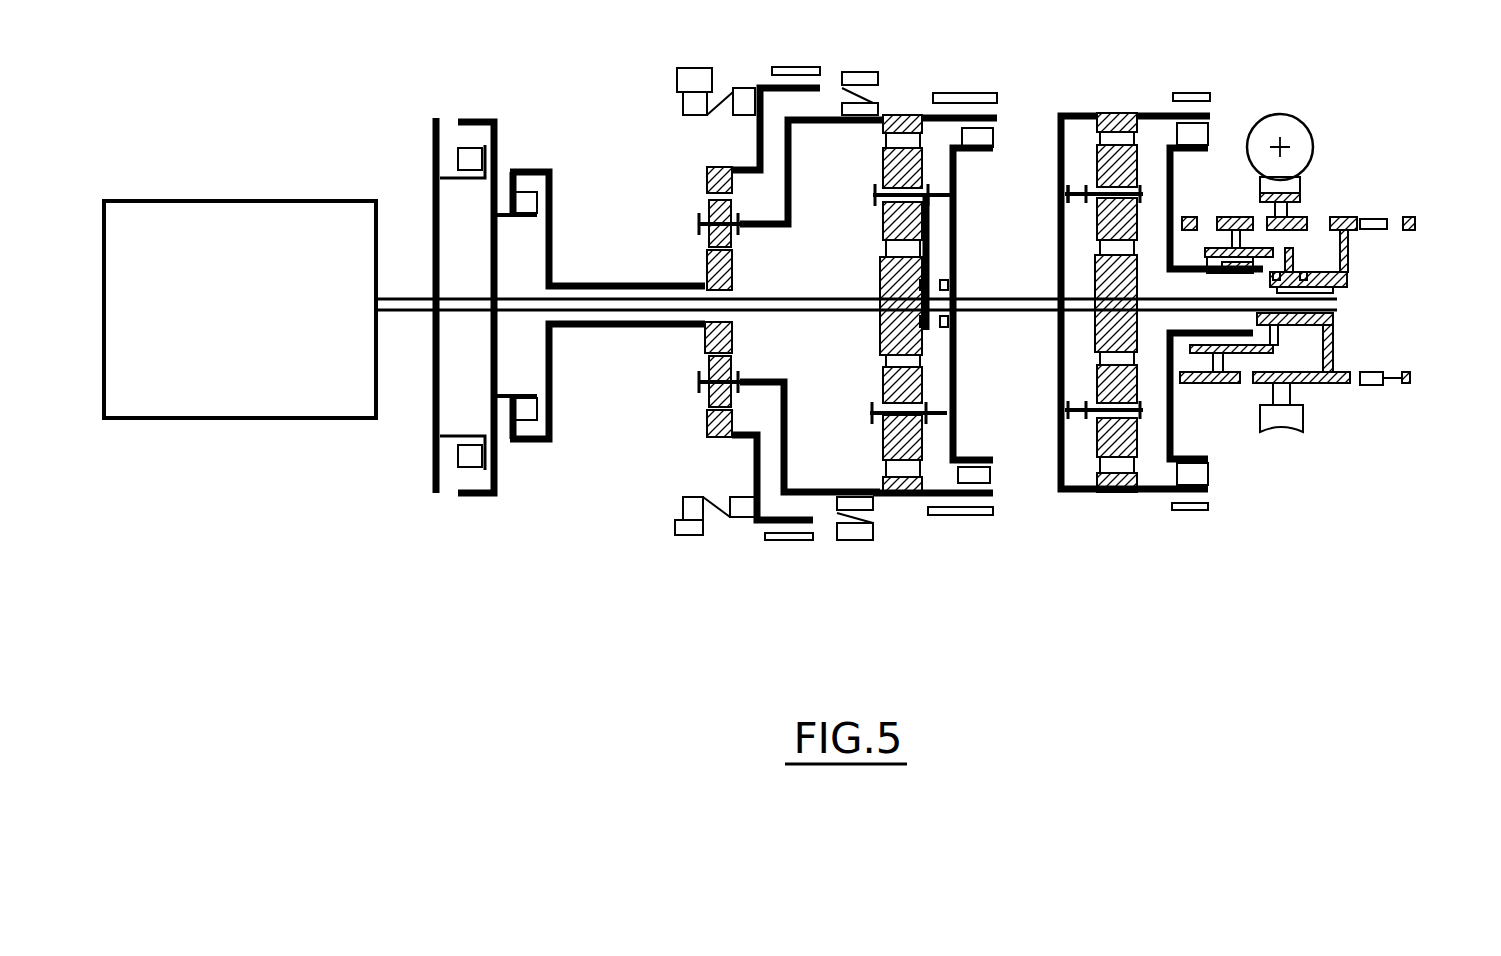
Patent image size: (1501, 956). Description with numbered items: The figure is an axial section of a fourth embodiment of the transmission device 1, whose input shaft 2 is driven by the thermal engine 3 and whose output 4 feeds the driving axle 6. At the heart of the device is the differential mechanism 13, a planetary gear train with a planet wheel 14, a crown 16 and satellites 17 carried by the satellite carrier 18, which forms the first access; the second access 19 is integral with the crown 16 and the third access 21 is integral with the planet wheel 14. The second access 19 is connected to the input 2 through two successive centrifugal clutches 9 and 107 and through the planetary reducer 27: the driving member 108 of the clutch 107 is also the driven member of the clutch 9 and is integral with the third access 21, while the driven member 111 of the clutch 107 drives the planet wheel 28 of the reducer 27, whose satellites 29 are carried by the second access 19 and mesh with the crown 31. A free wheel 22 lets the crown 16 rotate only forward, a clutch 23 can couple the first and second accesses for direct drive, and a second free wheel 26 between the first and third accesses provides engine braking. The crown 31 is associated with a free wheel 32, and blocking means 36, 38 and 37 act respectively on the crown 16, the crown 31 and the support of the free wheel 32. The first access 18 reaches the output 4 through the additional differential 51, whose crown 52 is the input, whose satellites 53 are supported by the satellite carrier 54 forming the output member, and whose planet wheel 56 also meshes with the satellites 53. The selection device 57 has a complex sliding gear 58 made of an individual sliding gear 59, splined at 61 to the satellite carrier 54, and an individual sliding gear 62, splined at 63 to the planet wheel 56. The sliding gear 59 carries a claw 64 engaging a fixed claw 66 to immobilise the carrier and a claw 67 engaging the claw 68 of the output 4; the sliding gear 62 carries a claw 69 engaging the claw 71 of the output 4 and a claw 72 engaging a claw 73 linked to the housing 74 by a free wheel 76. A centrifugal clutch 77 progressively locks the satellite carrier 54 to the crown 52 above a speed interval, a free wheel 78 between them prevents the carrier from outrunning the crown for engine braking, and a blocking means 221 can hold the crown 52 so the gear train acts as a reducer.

The transmission device 1 is at (675, 602).
The input shaft 2 is at (405, 296).
The thermal engine 3 is at (266, 420).
The output 4 is at (1287, 214).
The driving axle 6 is at (1322, 128).
The centrifugal clutch 9 is at (437, 512).
The differential mechanism 13 is at (937, 322).
The planet wheel 14 is at (915, 268).
The crown 16 is at (905, 112).
The satellites 17 is at (940, 200).
The satellite carrier 18 is at (962, 258).
The second access 19 is at (792, 174).
The third access 21 is at (780, 297).
The free wheel 22 is at (855, 545).
The clutch 23 is at (1000, 473).
The second free wheel 26 is at (934, 328).
The planetary reducer 27 is at (713, 228).
The planet wheel 28 is at (733, 334).
The satellites 29 is at (733, 224).
The crown 31 is at (707, 425).
The free wheel 32 is at (735, 530).
The means for selective blocking of the crown 16 36 is at (975, 518).
The means for selective blocking of the support of the free wheel 32 37 is at (690, 536).
The means for selective blocking of the crown 31 38 is at (792, 545).
The additional differential 51 is at (1153, 324).
The crown 52 is at (1112, 110).
The satellites 53 is at (1137, 160).
The satellite carrier 54 is at (1213, 165).
The planet wheel 56 is at (1122, 300).
The selection device 57 is at (1321, 424).
The complex sliding gear 58 is at (1325, 258).
The individual sliding gear 59 is at (1235, 216).
The splines 61 is at (1215, 271).
The individual sliding gear 62 is at (1350, 283).
The splines 63 is at (1334, 316).
The claw 64 is at (1226, 234).
The fixed claw 66 is at (1196, 216).
The claw 67 is at (1291, 246).
The claw 68 is at (1245, 400).
The claw 69 is at (1340, 218).
The claw 71 is at (1300, 218).
The claw 72 is at (1348, 388).
The claw 73 is at (1368, 372).
The housing 74 is at (1412, 377).
The free wheel 76 is at (1378, 396).
The centrifugal clutch 77 is at (1222, 482).
The free wheel 78 is at (1078, 420).
The centrifugal clutch 107 is at (598, 247).
The driving member 108 is at (515, 218).
The driven member 111 is at (553, 212).
The means for blocking the crown 52 221 is at (1210, 512).